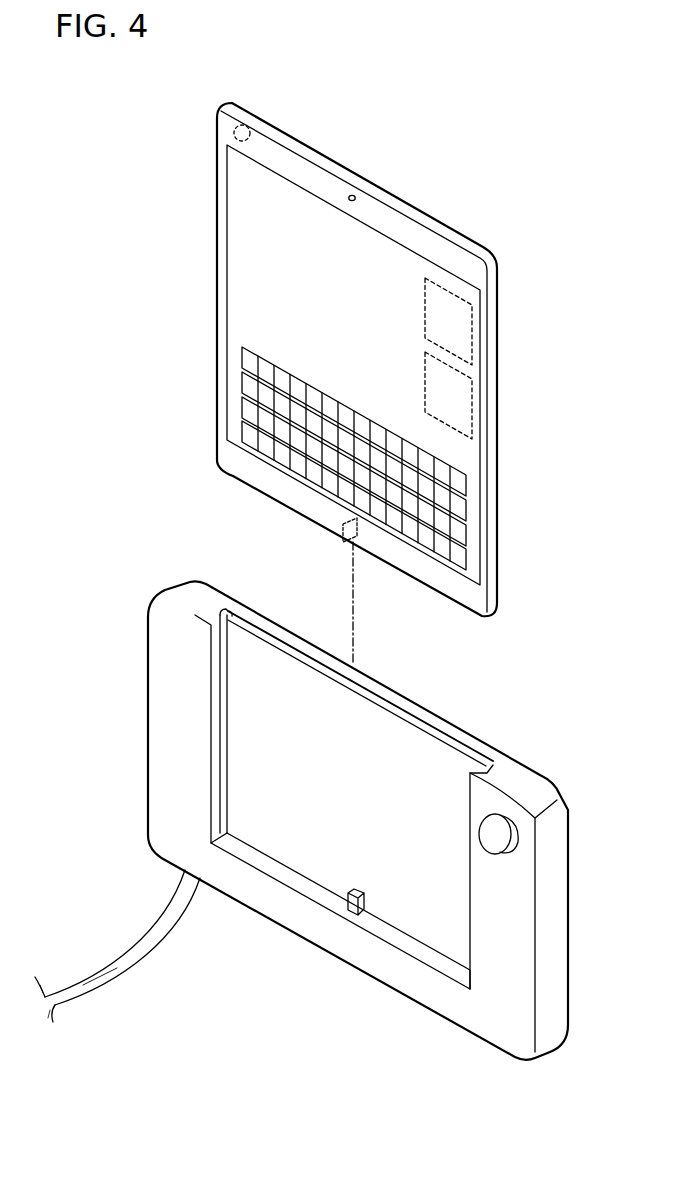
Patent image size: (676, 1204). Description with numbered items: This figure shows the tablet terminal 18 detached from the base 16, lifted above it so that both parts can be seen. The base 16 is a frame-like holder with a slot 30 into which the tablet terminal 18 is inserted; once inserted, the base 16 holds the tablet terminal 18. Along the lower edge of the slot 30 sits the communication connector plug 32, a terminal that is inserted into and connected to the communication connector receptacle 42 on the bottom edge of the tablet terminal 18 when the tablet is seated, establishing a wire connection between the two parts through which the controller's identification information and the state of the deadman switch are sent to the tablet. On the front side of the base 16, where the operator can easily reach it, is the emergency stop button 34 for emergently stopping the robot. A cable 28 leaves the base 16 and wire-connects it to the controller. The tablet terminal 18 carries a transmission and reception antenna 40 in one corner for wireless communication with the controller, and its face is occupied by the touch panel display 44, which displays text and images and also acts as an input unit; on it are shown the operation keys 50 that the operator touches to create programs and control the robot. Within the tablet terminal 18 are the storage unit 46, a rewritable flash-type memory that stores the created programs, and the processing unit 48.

The base 16 is at (148, 648).
The tablet terminal 18 is at (366, 174).
The cable 28 is at (155, 918).
The slot 30 is at (231, 612).
The communication connector plug 32 is at (355, 889).
The emergency stop button 34 is at (495, 832).
The transmission and reception antenna 40 is at (233, 130).
The communication connector receptacle 42 is at (345, 542).
The touch panel display 44 is at (255, 265).
The storage unit 46 is at (458, 332).
The processing unit 48 is at (458, 403).
The operation keys 50 is at (248, 357).